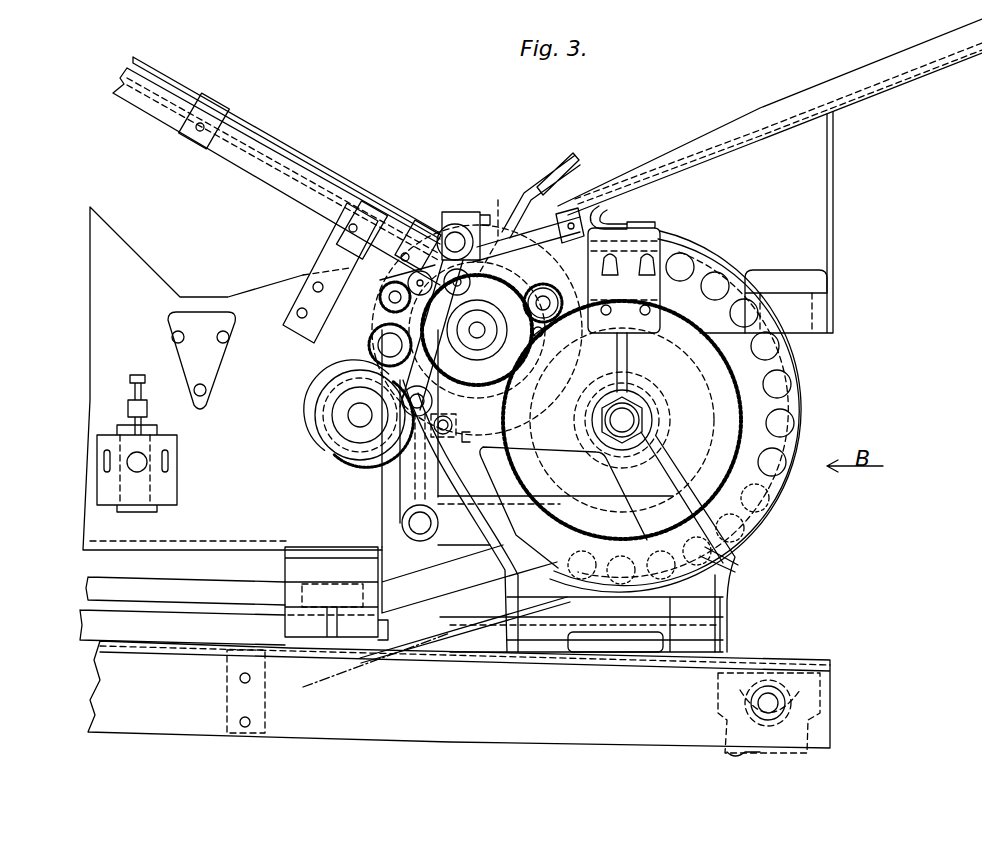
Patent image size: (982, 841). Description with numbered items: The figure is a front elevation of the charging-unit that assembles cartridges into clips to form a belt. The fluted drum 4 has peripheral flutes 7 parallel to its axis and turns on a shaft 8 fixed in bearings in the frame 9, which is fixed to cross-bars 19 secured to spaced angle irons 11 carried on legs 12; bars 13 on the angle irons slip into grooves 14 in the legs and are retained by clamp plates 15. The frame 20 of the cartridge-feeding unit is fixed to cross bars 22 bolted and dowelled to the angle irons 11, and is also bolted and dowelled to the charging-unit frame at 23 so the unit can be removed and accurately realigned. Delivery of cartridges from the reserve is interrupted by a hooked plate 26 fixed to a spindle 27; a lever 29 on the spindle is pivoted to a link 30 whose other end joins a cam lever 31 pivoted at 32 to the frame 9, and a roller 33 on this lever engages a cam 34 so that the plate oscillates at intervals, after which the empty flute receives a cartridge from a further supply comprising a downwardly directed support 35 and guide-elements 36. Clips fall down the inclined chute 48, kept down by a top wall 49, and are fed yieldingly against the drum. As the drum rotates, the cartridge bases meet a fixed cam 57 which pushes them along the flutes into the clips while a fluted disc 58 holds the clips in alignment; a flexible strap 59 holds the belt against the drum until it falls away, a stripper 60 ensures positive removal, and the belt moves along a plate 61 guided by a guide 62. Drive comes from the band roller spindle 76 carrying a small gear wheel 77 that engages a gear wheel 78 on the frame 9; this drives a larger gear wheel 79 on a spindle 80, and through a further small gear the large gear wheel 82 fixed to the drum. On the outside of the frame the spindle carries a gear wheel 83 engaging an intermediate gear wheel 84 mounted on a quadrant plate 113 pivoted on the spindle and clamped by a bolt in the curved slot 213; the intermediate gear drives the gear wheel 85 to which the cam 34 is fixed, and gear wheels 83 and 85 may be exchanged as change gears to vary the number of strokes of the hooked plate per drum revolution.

The fluted drum 4 is at (768, 442).
The peripheral flutes 7 is at (755, 383).
The shaft 8 is at (625, 418).
The frame 9 is at (653, 477).
The angle irons 11 is at (822, 725).
The legs 12 is at (723, 752).
The bars 13 is at (770, 700).
The grooves 14 is at (820, 685).
The clamp plates 15 is at (715, 683).
The cross-bars 19 is at (670, 647).
The frame 20 is at (157, 285).
The cross bars 22 is at (300, 563).
The bolted and dowelled connection 23 is at (500, 397).
The hooked plate 26 is at (498, 215).
The spindle 27 is at (447, 228).
The lever 29 is at (458, 238).
The link 30 is at (410, 222).
The cam lever 31 is at (403, 478).
The pivot 32 is at (402, 524).
The roller 33 is at (378, 347).
The cam 34 is at (312, 412).
The downwardly directed support 35 is at (770, 176).
The guide-elements 36 is at (558, 178).
The inclined chute 48 is at (280, 180).
The top wall 49 is at (303, 165).
The fixed cam 57 is at (717, 277).
The fluted disc 58 is at (710, 480).
The flexible strap 59 is at (693, 253).
The stripper 60 is at (448, 583).
The plate 61 is at (563, 240).
The guide 62 is at (217, 630).
The band roller spindle 76 is at (383, 300).
The small gear wheel 77 is at (378, 333).
The gear wheel 78 is at (408, 283).
The larger gear wheel 79 is at (545, 322).
The spindle 80 is at (480, 332).
The large gear wheel 82 is at (753, 503).
The gear wheel 83 is at (487, 410).
The intermediate gear wheel 84 is at (507, 452).
The gear wheel 85 is at (338, 452).
The quadrant plate 113 is at (473, 447).
The curved slot 213 is at (540, 338).